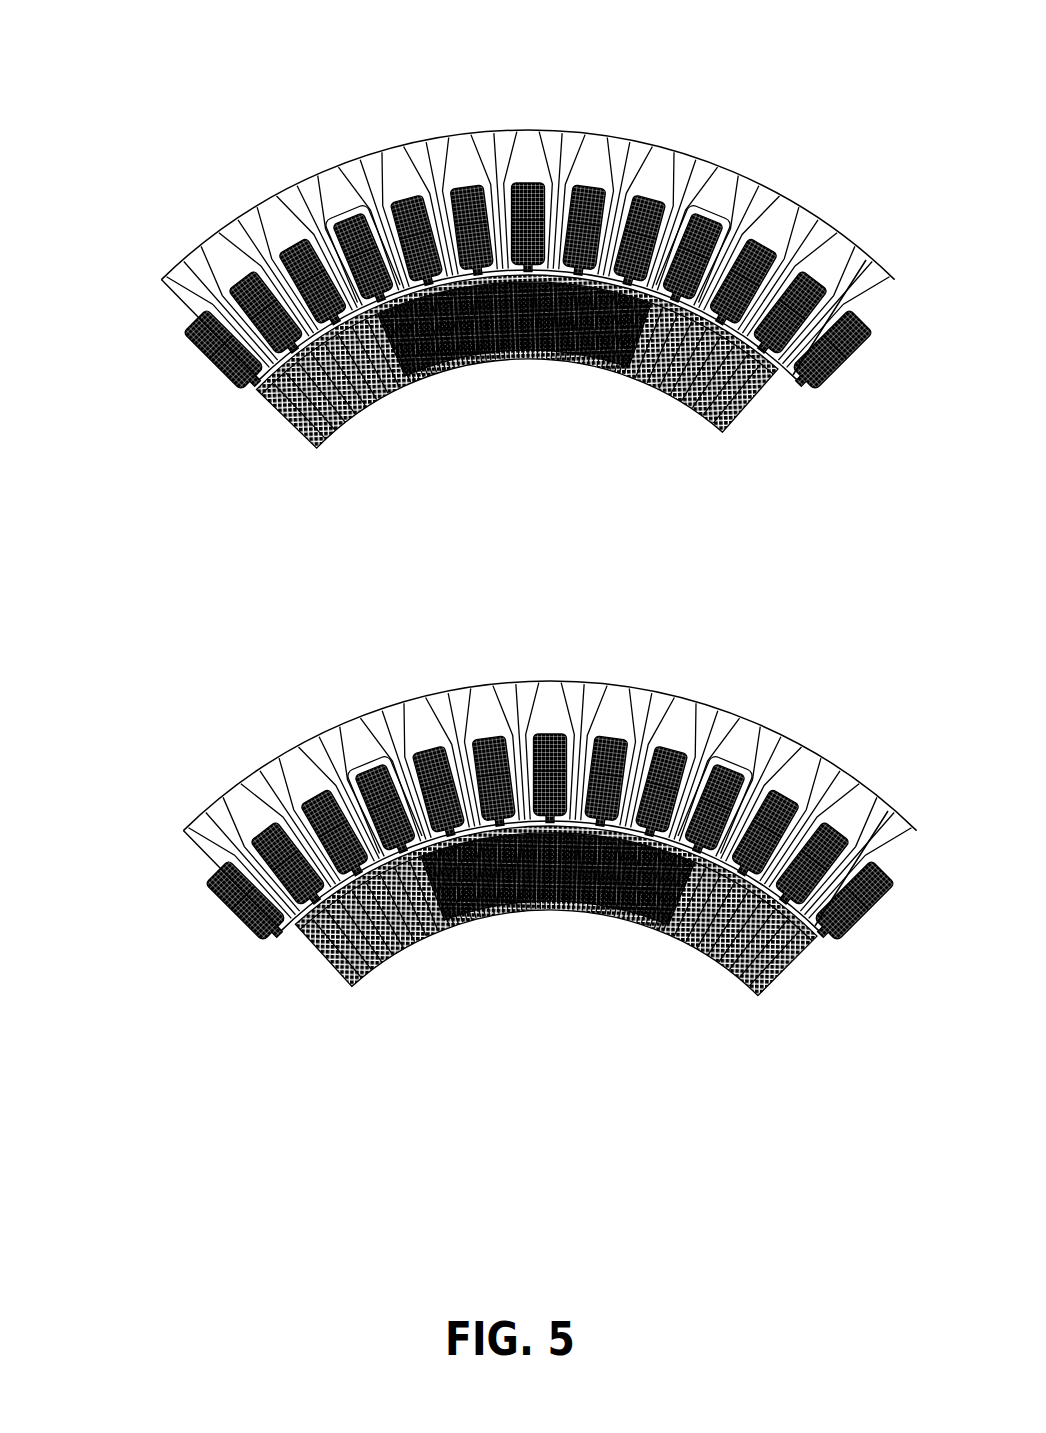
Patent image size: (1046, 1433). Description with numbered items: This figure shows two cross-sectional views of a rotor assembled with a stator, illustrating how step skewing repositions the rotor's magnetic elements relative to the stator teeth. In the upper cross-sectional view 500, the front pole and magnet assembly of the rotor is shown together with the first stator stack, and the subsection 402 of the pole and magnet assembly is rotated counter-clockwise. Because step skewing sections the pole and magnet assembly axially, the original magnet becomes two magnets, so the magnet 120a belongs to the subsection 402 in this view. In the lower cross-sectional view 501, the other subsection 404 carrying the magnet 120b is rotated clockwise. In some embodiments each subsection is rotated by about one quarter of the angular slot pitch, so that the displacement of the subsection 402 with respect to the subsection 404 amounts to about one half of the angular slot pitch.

The cross-sectional view 500 is at (143, 203).
The magnet 120a is at (527, 345).
The subsection 402 is at (730, 407).
The cross-sectional view 501 is at (142, 777).
The subsection 404 is at (358, 962).
The magnet 120b is at (570, 893).